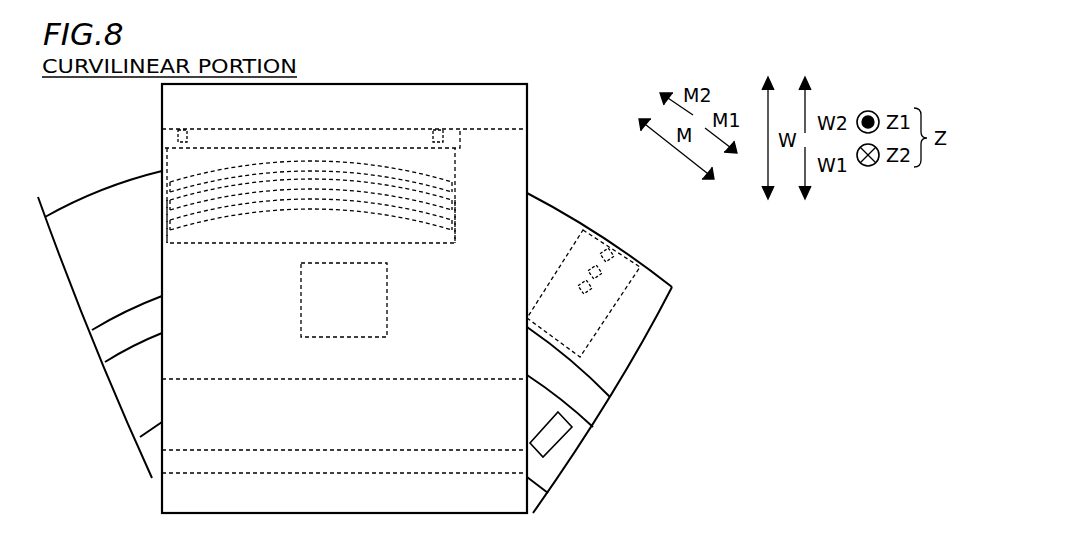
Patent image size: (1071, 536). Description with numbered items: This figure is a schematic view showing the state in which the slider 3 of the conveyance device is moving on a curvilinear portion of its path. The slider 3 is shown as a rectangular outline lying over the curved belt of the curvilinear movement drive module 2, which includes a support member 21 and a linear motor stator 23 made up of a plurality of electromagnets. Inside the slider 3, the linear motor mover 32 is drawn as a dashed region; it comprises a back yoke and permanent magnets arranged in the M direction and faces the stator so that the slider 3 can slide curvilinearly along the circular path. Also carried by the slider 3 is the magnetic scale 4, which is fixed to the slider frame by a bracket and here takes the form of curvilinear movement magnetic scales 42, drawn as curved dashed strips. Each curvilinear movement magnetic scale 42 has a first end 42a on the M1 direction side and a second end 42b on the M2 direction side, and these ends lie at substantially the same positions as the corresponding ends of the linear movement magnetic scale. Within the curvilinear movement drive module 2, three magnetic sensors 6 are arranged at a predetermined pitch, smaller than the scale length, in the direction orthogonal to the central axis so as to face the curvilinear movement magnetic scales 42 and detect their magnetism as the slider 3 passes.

The curvilinear movement drive module 2 is at (585, 212).
The slider 3 is at (532, 129).
The magnetic scale 4 is at (416, 249).
The magnetic sensors 6 is at (612, 259).
The support member 21 is at (587, 373).
The linear motor stator 23 is at (560, 440).
The linear motor mover 32 is at (483, 378).
The curvilinear movement magnetic scale 42 is at (170, 184).
The first end of the curvilinear movement magnetic scale 42a is at (454, 244).
The second end of the curvilinear movement magnetic scale 42b is at (172, 246).